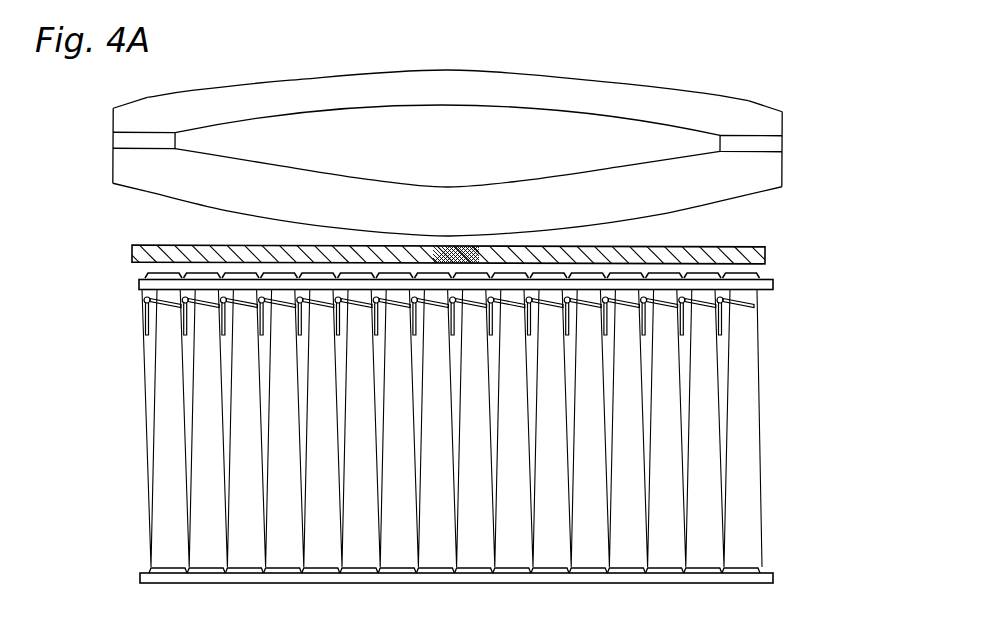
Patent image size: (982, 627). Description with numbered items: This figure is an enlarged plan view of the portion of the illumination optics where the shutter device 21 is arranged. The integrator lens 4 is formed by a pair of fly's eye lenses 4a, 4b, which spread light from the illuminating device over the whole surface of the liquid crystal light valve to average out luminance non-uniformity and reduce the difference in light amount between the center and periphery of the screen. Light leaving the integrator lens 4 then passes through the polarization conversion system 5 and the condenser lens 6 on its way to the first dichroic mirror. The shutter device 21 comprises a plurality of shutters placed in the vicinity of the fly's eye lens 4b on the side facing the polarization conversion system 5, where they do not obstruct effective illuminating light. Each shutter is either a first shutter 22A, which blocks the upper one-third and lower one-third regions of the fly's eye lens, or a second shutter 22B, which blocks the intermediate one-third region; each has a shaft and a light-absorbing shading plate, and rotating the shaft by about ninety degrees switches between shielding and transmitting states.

The condenser lens 6 is at (773, 165).
The polarization conversion system 5 is at (766, 246).
The shutter device 21 is at (116, 292).
The integrator lens 4 is at (515, 429).
The fly's eye lens 4a is at (501, 578).
The fly's eye lens 4b is at (773, 284).
The first shutter 22A is at (752, 308).
The second shutter 22B is at (723, 318).